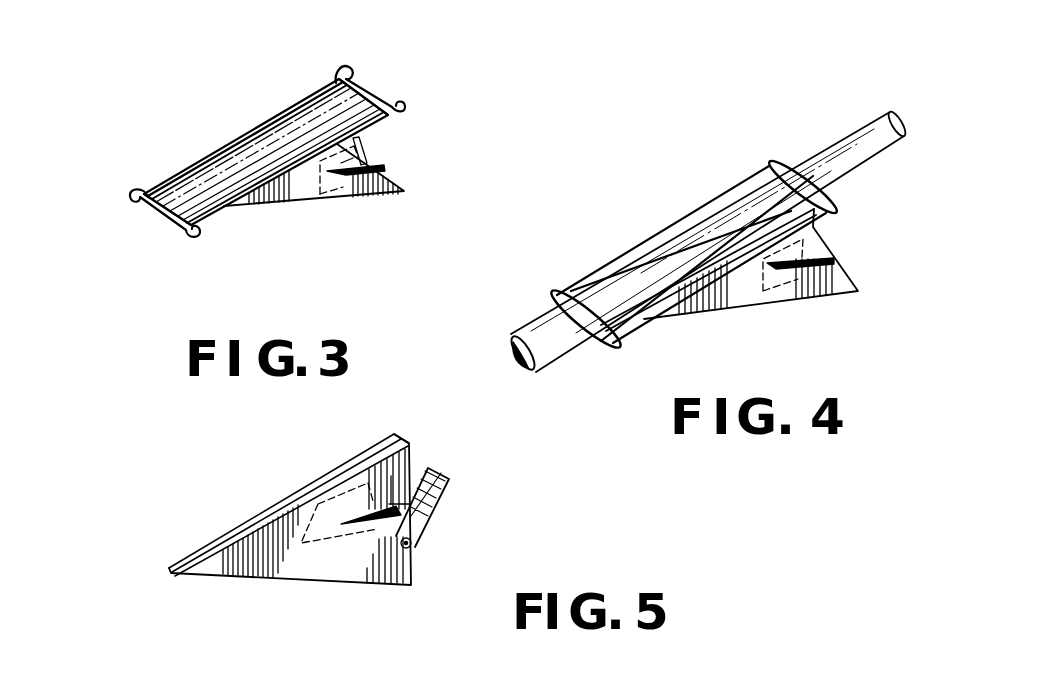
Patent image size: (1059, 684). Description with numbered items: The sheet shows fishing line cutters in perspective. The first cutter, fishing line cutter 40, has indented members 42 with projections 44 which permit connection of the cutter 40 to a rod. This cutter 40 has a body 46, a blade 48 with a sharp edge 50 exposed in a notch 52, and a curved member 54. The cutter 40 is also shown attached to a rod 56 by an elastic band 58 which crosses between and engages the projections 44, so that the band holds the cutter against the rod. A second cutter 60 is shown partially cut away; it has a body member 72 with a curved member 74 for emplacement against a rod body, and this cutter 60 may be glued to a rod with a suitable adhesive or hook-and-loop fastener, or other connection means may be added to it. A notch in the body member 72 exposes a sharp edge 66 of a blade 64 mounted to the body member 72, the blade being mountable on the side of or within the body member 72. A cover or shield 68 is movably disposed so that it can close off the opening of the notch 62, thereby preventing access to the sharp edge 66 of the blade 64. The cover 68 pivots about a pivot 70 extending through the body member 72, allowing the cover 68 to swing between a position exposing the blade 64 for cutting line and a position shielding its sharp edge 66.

In FIG. 3, the fishing line cutter 40 is at (287, 210).
In FIG. 4, the fishing line cutter 40 is at (755, 305).
In FIG. 3, the indented members 42 is at (373, 83).
In FIG. 3, the projections 44 is at (335, 70).
In FIG. 3, the body 46 is at (363, 130).
In FIG. 3, the blade 48 is at (333, 182).
In FIG. 3, the sharp edge 50 is at (377, 172).
In FIG. 3, the notch 52 is at (362, 153).
In FIG. 3, the curved member 54 is at (223, 162).
In FIG. 4, the rod 56 is at (516, 326).
In FIG. 4, the elastic band 58 is at (623, 258).
In FIG. 5, the cutter 60 is at (393, 586).
In FIG. 5, the notch 62 is at (403, 478).
In FIG. 5, the blade 64 is at (315, 540).
In FIG. 5, the sharp edge 66 is at (387, 518).
In FIG. 5, the cover or shield 68 is at (450, 488).
In FIG. 5, the pivot 70 is at (412, 545).
In FIG. 5, the body member 72 is at (215, 567).
In FIG. 5, the curved member 74 is at (275, 503).